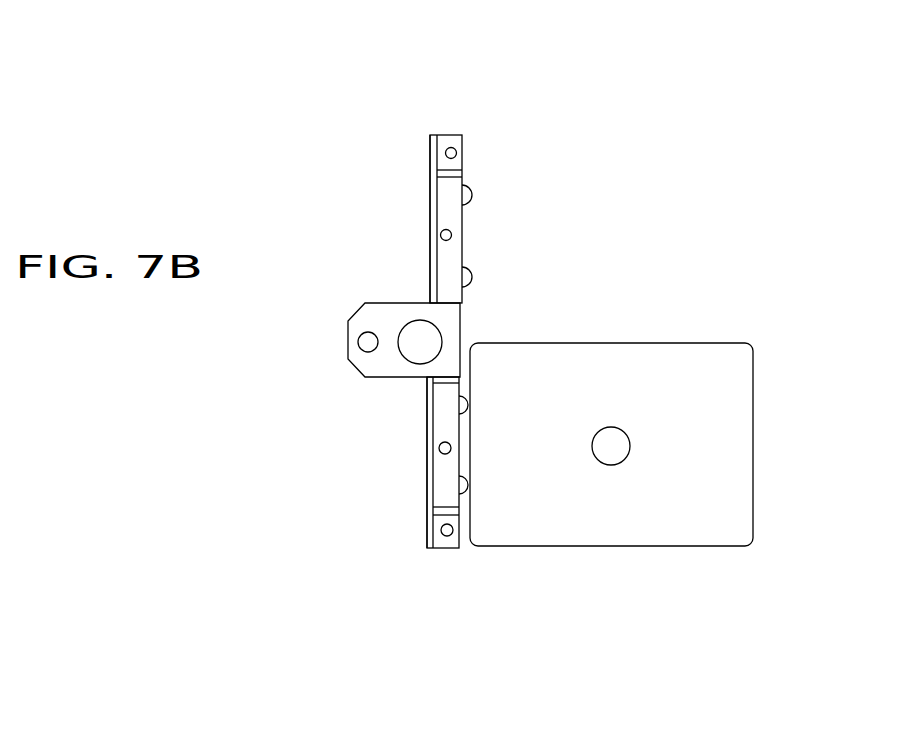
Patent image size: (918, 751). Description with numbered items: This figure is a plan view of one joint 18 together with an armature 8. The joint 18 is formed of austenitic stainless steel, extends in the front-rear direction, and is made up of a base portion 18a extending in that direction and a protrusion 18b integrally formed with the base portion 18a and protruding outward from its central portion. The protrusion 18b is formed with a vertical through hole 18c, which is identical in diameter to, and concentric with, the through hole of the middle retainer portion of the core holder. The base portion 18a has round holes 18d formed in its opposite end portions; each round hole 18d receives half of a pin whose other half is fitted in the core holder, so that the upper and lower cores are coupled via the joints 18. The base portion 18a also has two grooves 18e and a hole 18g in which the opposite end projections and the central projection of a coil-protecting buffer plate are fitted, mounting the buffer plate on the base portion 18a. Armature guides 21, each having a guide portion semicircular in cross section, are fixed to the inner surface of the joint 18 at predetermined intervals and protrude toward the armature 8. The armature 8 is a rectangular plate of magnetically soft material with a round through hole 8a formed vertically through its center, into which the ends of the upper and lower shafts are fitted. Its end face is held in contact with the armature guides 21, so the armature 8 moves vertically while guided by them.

The joint 18 is at (463, 93).
The base portion 18a is at (430, 181).
The protrusion 18b is at (348, 352).
The vertical through hole 18c is at (415, 363).
The round hole 18d is at (452, 148).
The groove 18e is at (445, 300).
The hole 18g is at (452, 232).
The armature guide 21 is at (471, 188).
The armature 8 is at (753, 413).
The round through hole 8a is at (609, 432).